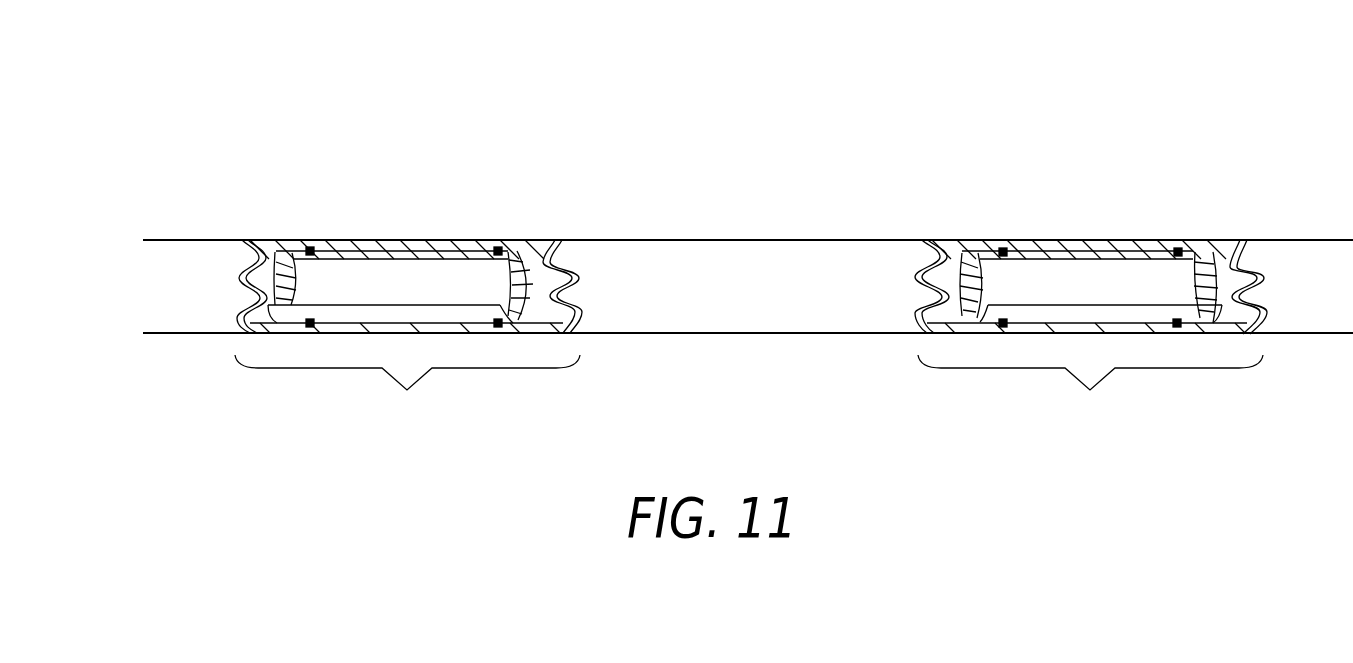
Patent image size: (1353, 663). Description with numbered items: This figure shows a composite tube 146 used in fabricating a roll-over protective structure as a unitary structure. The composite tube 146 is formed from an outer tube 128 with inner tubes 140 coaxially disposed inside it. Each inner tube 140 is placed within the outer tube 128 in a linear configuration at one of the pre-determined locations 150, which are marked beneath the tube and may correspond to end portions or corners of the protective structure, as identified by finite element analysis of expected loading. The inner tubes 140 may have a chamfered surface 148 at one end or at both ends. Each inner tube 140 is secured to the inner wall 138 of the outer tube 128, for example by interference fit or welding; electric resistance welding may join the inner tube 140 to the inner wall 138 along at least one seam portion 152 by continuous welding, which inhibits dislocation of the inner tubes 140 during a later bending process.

The composite tube 146 is at (218, 139).
The inner wall 138 is at (555, 242).
The inner tube 140 is at (355, 258).
The outer tube 128 is at (433, 250).
The seam portion 152 is at (308, 248).
The chamfered surface 148 is at (962, 283).
The pre-determined location 150 is at (749, 391).